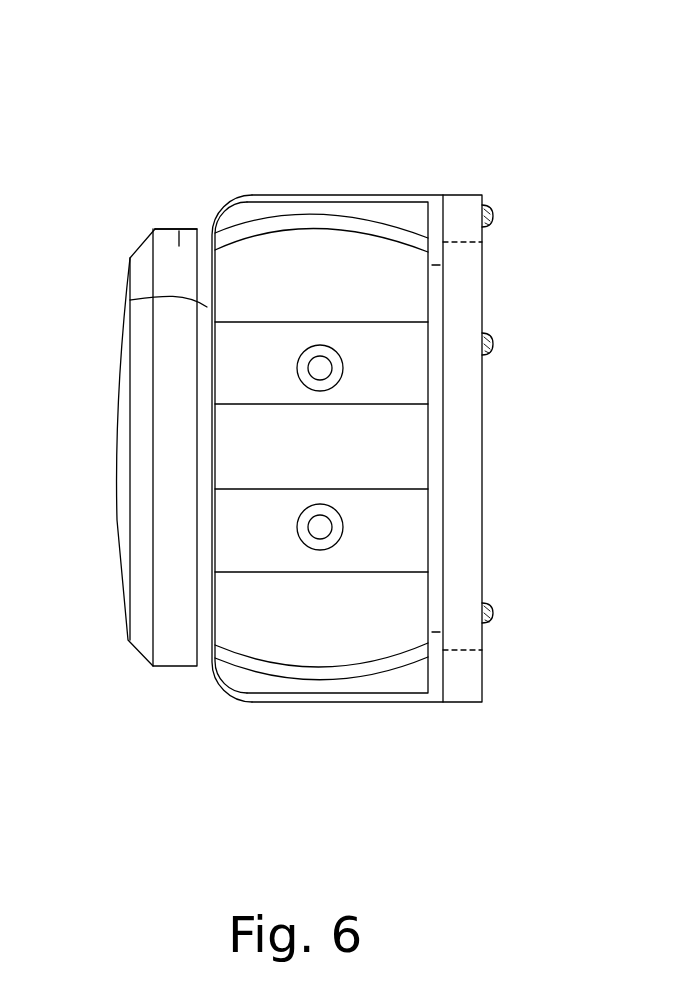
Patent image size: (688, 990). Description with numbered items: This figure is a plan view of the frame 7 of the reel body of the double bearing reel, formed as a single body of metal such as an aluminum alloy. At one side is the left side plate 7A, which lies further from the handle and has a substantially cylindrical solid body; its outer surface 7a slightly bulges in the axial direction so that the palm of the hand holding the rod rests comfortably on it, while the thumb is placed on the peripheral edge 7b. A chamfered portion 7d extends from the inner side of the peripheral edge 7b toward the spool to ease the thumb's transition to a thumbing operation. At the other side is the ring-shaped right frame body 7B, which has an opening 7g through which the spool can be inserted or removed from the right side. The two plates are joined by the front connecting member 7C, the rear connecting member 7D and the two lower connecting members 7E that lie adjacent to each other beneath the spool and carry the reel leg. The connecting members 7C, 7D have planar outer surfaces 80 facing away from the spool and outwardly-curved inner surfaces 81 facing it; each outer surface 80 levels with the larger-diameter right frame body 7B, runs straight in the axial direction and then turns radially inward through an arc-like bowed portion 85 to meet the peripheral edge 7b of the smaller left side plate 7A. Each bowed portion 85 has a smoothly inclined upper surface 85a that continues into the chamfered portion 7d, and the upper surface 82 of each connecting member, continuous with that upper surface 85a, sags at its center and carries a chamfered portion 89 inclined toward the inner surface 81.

The frame 7 is at (384, 106).
The left side plate 7A is at (168, 254).
The outer surface 7a is at (128, 428).
The peripheral edge 7b is at (184, 228).
The chamfered portion 7d is at (130, 300).
The right frame body 7B is at (458, 231).
The front connecting member 7C is at (347, 213).
The rear connecting member 7D is at (337, 688).
The lower connecting members 7E is at (405, 375).
The opening 7g is at (462, 244).
The outer surface 80 is at (303, 193).
The inner surface 81 is at (320, 228).
The upper surface 82 is at (395, 197).
The bowed portion 85 is at (213, 196).
The upper surface of bowed portion 85a is at (222, 208).
The chamfered portion 89 is at (306, 208).